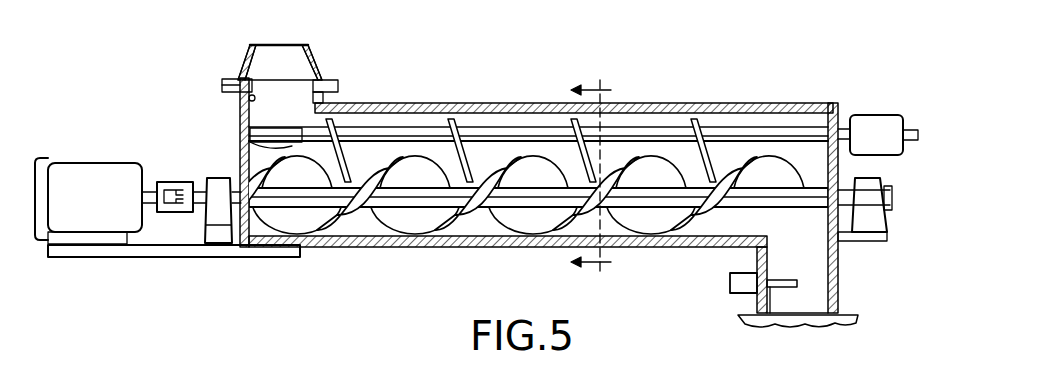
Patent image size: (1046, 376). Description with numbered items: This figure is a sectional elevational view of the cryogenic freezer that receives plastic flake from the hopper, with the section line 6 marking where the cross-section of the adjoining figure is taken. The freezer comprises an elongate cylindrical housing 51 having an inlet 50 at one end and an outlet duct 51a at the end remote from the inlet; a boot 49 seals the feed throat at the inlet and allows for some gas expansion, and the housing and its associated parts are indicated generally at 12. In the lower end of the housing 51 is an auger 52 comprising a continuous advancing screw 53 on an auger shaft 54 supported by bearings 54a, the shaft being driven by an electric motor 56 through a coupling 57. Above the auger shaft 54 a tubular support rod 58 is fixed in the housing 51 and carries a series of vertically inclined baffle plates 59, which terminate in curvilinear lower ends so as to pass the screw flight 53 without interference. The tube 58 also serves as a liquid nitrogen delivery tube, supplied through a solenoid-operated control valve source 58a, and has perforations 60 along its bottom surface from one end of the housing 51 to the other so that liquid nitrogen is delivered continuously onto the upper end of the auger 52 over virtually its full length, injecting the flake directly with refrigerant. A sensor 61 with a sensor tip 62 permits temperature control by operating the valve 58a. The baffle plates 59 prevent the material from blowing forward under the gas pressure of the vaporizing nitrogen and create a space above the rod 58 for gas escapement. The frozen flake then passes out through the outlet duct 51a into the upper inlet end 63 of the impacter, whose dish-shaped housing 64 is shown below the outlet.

The housing 12 is at (483, 100).
The boot 49 is at (322, 64).
The inlet 50 is at (240, 104).
The elongate cylindrical housing 51 is at (703, 103).
The outlet duct 51a is at (757, 298).
The auger 52 is at (513, 235).
The continuous advancing screw 53 is at (418, 224).
The auger shaft 54 is at (494, 212).
The bearings 54a is at (218, 220).
The electric motor 56 is at (99, 181).
The coupling 57 is at (183, 212).
The tubular support rod 58 is at (790, 130).
The liquid nitrogen solenoid-operated control valve source 58a is at (876, 120).
The baffle plates 59 is at (732, 150).
The perforations 60 is at (250, 147).
The sensor 61 is at (745, 280).
The sensor tip 62 is at (785, 280).
The upper inlet end 63 is at (797, 306).
The housing 64 is at (855, 317).
The section line 6- 6 is at (601, 176).